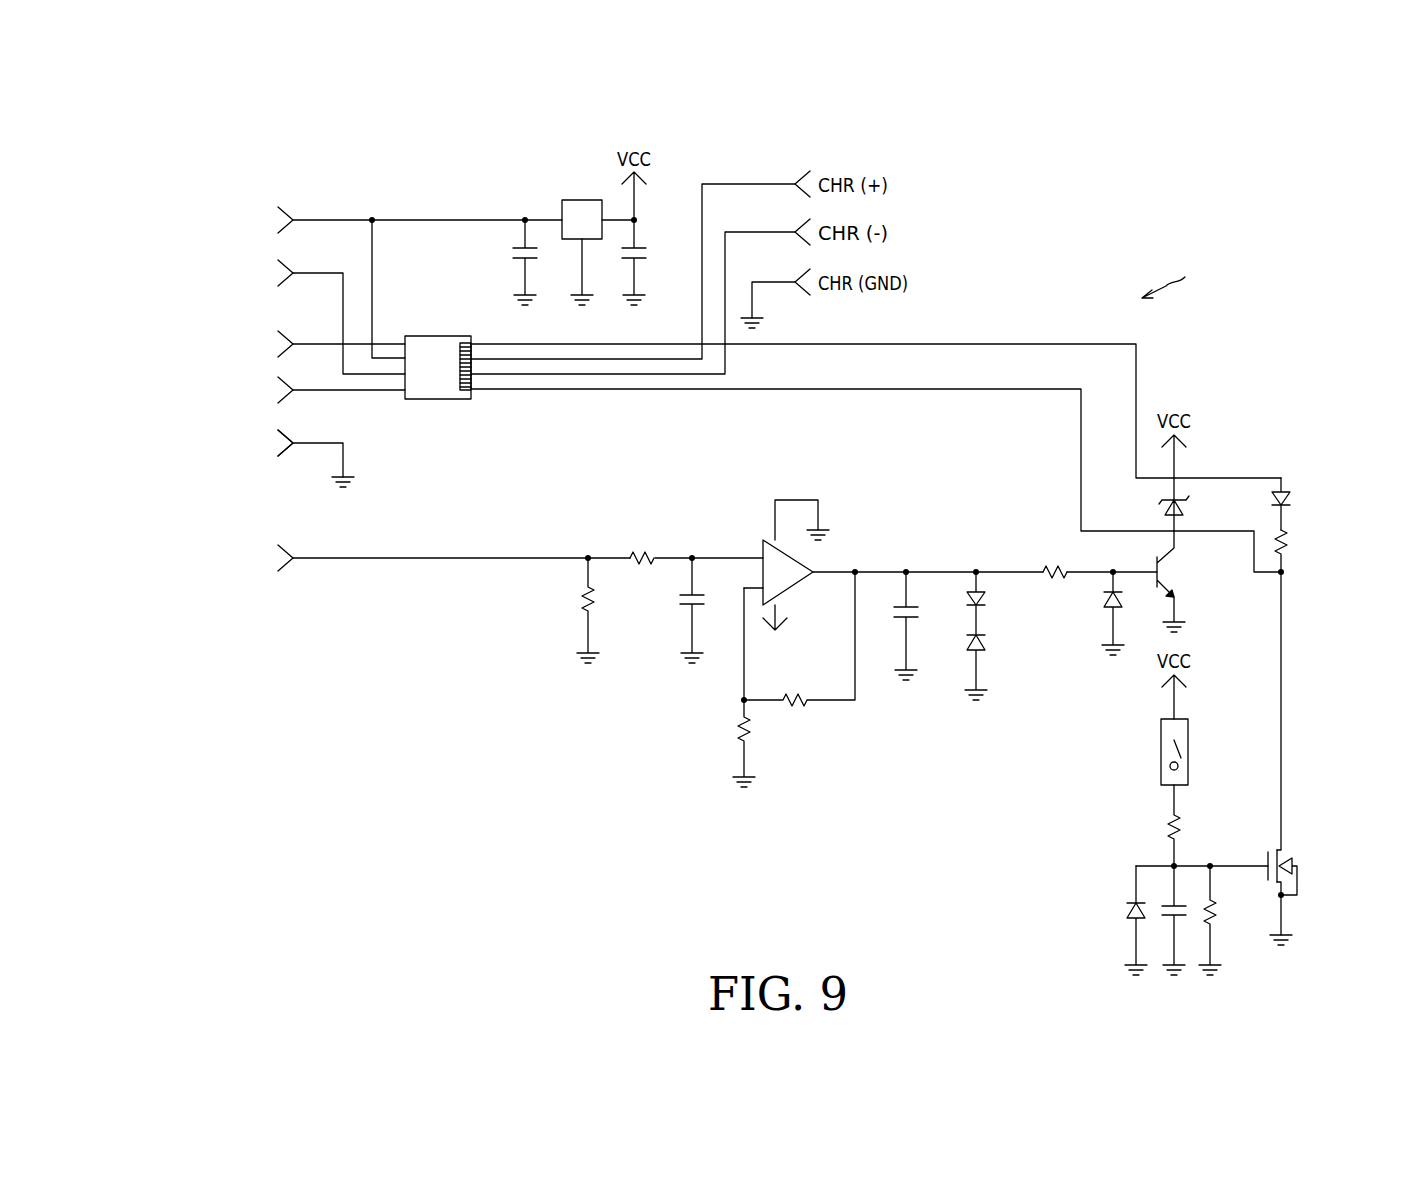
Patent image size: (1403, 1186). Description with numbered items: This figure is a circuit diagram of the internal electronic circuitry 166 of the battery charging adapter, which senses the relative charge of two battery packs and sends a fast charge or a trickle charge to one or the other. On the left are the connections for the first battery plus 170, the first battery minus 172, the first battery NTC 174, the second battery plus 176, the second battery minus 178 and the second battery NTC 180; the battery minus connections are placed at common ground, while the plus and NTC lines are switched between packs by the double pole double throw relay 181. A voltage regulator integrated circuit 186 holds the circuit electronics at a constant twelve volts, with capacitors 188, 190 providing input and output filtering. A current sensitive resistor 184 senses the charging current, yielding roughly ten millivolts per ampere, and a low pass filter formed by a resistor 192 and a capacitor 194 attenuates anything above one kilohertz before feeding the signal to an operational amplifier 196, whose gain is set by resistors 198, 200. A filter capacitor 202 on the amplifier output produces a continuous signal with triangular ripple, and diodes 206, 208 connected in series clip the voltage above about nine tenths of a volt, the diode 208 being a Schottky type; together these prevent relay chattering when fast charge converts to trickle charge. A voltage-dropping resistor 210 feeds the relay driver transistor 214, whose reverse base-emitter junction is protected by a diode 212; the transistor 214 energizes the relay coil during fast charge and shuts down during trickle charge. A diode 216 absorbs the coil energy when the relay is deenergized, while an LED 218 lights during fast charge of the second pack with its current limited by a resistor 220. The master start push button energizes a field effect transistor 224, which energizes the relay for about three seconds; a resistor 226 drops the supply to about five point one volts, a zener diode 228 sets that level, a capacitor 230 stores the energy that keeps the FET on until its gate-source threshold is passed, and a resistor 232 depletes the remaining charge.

The internal electronic circuitry 166 is at (1185, 276).
The first battery plus connection 170 is at (276, 220).
The first battery minus connection 172 is at (276, 443).
The first battery NTC connection 174 is at (276, 273).
The second battery plus connection 176 is at (276, 344).
The second battery minus connection 178 is at (249, 452).
The second battery NTC connection 180 is at (276, 390).
The double pole double throw relay 181 is at (471, 399).
The current sensitive resistor 184 is at (585, 603).
The voltage regulator integrated circuit 186 is at (585, 200).
The capacitor 188 is at (522, 254).
The capacitor 190 is at (637, 247).
The resistor 192 is at (647, 553).
The capacitor 194 is at (690, 600).
The operational amplifier 196 is at (790, 595).
The resistor 198 is at (740, 733).
The resistor 200 is at (807, 708).
The filter capacitor 202 is at (910, 615).
The diode 206 is at (985, 599).
The Schottky diode 208 is at (985, 645).
The voltage-dropping resistor 210 is at (1045, 568).
The diode 212 is at (1109, 607).
The relay driver transistor 214 is at (1165, 574).
The diode 216 is at (1185, 507).
The LED 218 is at (1292, 498).
The resistor 220 is at (1292, 542).
The field effect transistor 224 is at (1294, 863).
The resistor 226 is at (1168, 826).
The zener diode 228 is at (1128, 910).
The capacitor 230 is at (1178, 906).
The resistor 232 is at (1216, 916).